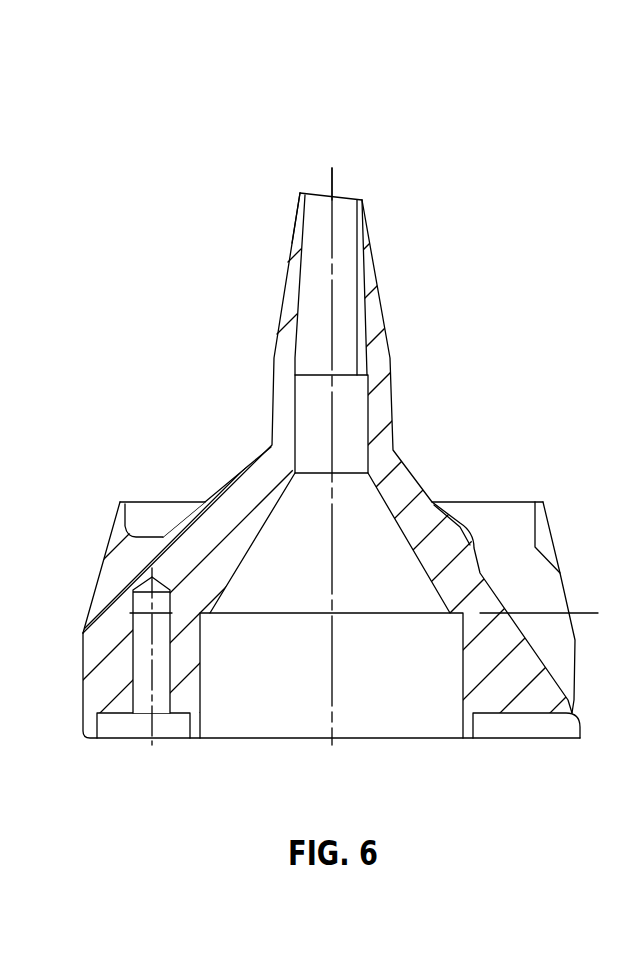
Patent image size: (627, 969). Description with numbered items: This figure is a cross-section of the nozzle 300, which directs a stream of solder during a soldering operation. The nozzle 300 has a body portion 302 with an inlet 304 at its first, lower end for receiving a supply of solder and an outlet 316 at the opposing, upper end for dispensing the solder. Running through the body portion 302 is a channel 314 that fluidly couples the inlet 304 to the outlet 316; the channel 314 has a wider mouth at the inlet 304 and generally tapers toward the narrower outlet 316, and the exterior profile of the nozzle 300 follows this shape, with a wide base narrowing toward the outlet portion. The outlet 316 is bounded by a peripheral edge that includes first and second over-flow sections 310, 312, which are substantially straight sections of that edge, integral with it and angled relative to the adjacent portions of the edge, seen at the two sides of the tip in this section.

The nozzle 300 is at (452, 274).
The body portion 302 is at (270, 432).
The inlet 304 is at (225, 770).
The first over-flow section 310 is at (363, 199).
The second over-flow section 312 is at (301, 192).
The channel 314 is at (315, 274).
The outlet 316 is at (366, 136).